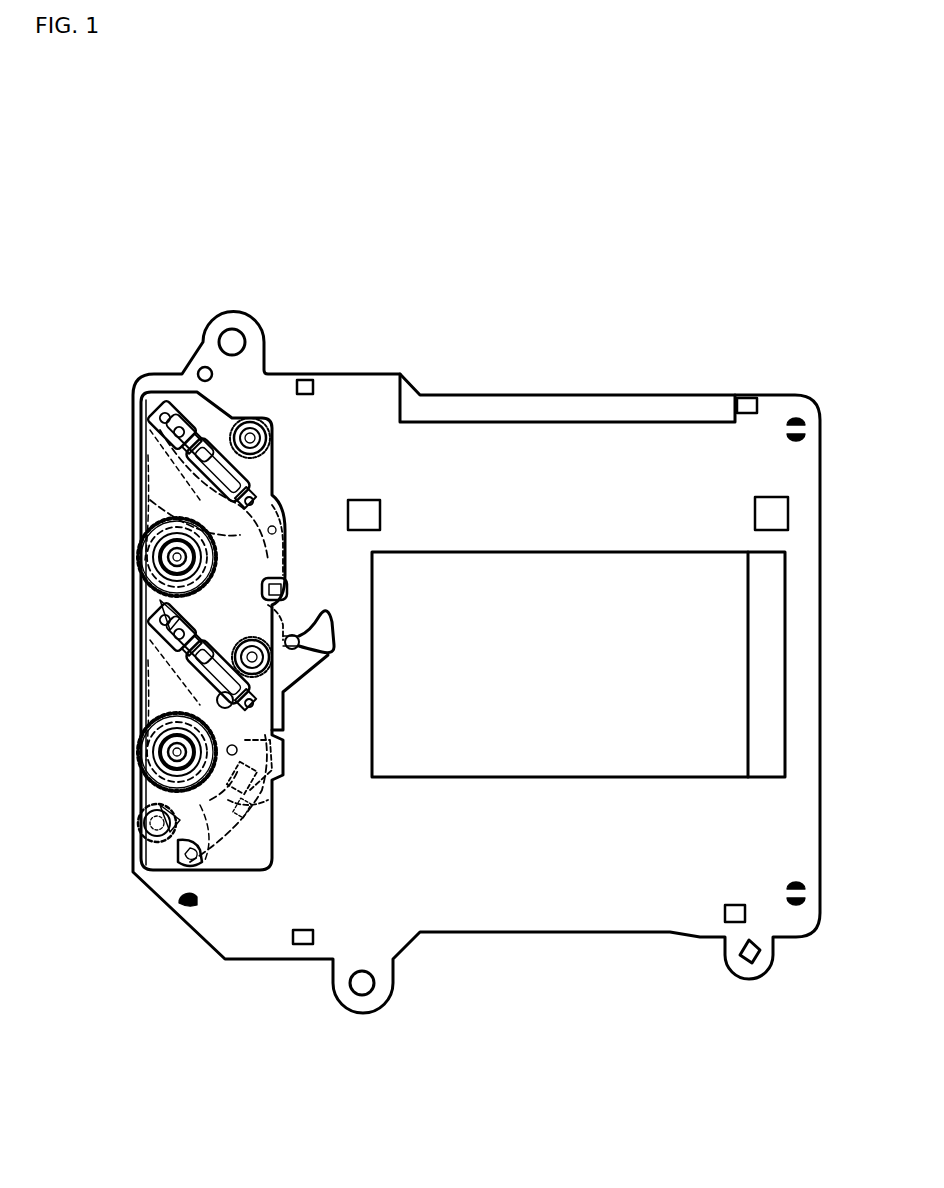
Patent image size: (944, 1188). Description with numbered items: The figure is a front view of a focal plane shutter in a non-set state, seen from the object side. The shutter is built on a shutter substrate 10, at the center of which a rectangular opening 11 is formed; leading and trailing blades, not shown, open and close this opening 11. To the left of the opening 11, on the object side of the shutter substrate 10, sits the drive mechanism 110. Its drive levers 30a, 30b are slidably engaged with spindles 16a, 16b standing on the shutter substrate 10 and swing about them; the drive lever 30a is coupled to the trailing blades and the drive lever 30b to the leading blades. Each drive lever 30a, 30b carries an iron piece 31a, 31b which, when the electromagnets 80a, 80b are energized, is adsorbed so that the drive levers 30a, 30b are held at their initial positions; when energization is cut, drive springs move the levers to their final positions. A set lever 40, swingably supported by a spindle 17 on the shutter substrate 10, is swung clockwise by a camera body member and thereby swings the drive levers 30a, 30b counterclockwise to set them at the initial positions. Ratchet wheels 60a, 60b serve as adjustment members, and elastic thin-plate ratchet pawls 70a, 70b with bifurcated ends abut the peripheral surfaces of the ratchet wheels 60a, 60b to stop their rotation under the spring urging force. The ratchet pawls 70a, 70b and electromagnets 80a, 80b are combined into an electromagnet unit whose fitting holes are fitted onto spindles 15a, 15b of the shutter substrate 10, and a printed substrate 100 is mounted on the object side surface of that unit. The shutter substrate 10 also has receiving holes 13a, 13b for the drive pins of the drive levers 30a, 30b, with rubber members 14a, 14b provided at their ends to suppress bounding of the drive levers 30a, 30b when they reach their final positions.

The shutter substrate 10 is at (797, 946).
The opening 11 is at (727, 666).
The printed substrate 100 is at (247, 865).
The drive mechanism 110 is at (300, 890).
The spindle 17 is at (283, 698).
The set lever 40 is at (338, 655).
The rubber member 14a is at (289, 588).
The rubber member 14b is at (180, 858).
The spindle 15a is at (270, 437).
The spindle 15b is at (138, 828).
The spindle 16a is at (175, 556).
The spindle 16b is at (175, 752).
The ratchet wheel 60a is at (137, 558).
The ratchet wheel 60b is at (138, 750).
The ratchet pawl 70a is at (150, 496).
The ratchet pawl 70b is at (150, 710).
The electromagnet 80a is at (238, 418).
The electromagnet 80b is at (150, 684).
The receiving hole 13a is at (262, 503).
The receiving hole 13b is at (258, 828).
The drive lever 30a is at (286, 524).
The drive lever 30b is at (278, 783).
The iron piece 31a is at (284, 602).
The iron piece 31b is at (262, 800).